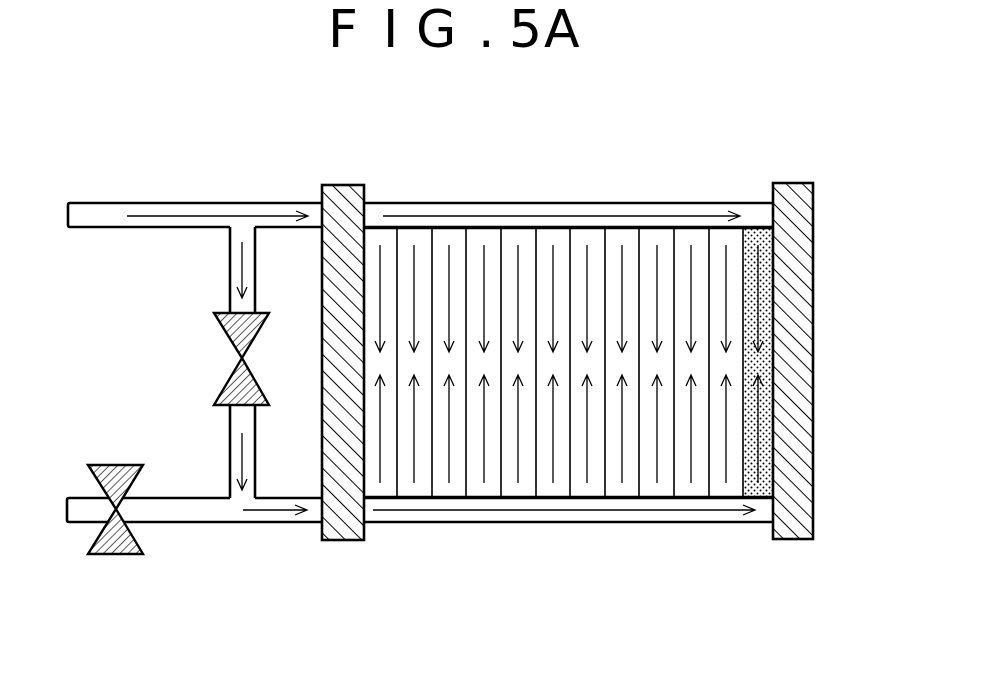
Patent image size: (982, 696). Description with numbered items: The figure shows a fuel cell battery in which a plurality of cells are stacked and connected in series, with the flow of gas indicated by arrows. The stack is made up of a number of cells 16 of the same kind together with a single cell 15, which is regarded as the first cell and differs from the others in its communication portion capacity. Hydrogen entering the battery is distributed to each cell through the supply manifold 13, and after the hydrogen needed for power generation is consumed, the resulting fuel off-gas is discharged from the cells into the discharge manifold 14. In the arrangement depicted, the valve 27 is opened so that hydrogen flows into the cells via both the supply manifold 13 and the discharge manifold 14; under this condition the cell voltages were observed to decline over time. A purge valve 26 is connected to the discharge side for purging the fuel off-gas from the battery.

The supply manifold 13 is at (560, 202).
The discharge manifold 14 is at (585, 522).
The cell 15 is at (748, 237).
The cell 16 is at (645, 247).
The purge valve 26 is at (115, 465).
The valve 27 is at (227, 342).